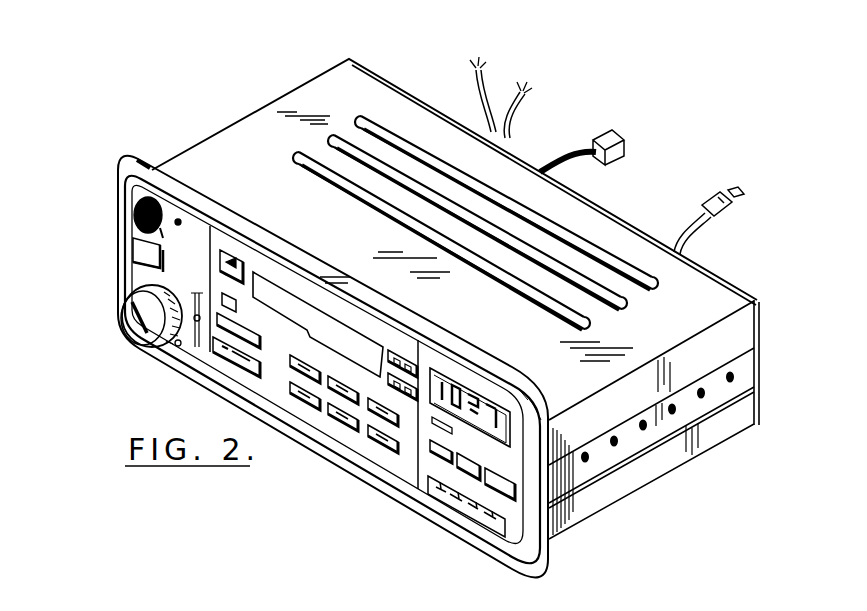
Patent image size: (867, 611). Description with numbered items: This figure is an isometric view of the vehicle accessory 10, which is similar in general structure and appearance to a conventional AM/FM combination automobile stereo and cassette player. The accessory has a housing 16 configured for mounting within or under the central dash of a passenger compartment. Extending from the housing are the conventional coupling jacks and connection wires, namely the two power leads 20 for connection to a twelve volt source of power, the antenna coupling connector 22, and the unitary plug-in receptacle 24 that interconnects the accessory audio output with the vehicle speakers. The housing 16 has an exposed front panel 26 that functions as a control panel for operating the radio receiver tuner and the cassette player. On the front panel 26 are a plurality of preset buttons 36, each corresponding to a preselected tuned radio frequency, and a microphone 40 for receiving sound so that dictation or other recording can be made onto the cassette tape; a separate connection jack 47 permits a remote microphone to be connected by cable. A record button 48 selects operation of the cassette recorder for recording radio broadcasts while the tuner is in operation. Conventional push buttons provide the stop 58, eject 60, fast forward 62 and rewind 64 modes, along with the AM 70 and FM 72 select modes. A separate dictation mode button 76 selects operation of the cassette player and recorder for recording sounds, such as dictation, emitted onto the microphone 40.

The vehicle accessory 10 is at (255, 74).
The housing 16 is at (313, 77).
The power leads 20 is at (490, 95).
The antenna coupling connector 22 is at (735, 204).
The unitary plug-in receptacle 24 is at (622, 141).
The front panel 26 is at (497, 455).
The preset buttons 36 is at (373, 442).
The microphone 40 is at (133, 213).
The connection jack 47 is at (178, 219).
The record button 48 is at (136, 248).
The stop mode selector 58 is at (253, 297).
The eject mode selector 60 is at (232, 260).
The fast forward mode selector 62 is at (415, 365).
The rewind mode selector 64 is at (383, 367).
The AM select mode selector 70 is at (247, 367).
The FM select mode selector 72 is at (210, 348).
The dictation mode button 76 is at (463, 397).